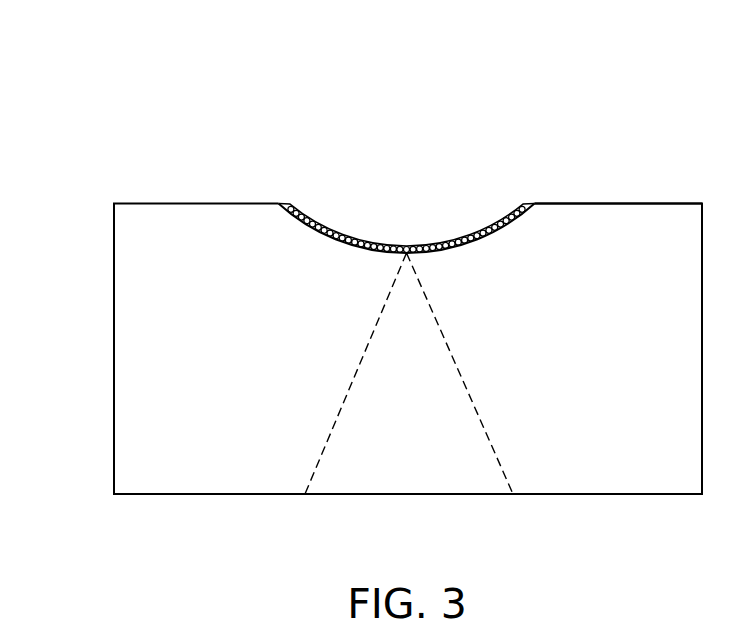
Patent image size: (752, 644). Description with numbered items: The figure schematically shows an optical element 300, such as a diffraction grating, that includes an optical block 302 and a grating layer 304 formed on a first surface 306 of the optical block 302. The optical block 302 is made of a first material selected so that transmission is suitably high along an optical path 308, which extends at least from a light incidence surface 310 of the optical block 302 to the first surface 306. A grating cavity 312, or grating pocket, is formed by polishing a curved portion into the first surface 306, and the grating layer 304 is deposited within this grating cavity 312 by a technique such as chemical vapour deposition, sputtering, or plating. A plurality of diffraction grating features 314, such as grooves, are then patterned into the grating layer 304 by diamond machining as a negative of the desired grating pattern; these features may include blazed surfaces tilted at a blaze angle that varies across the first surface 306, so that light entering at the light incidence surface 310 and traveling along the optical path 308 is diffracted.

The optical element 300 is at (113, 103).
The optical block 302 is at (122, 350).
The grating layer 304 is at (498, 218).
The first surface 306 is at (608, 203).
The optical path 308 is at (402, 248).
The light incidence surface 310 is at (208, 495).
The grating cavity 312 is at (356, 188).
The diffraction grating features 314 is at (463, 218).